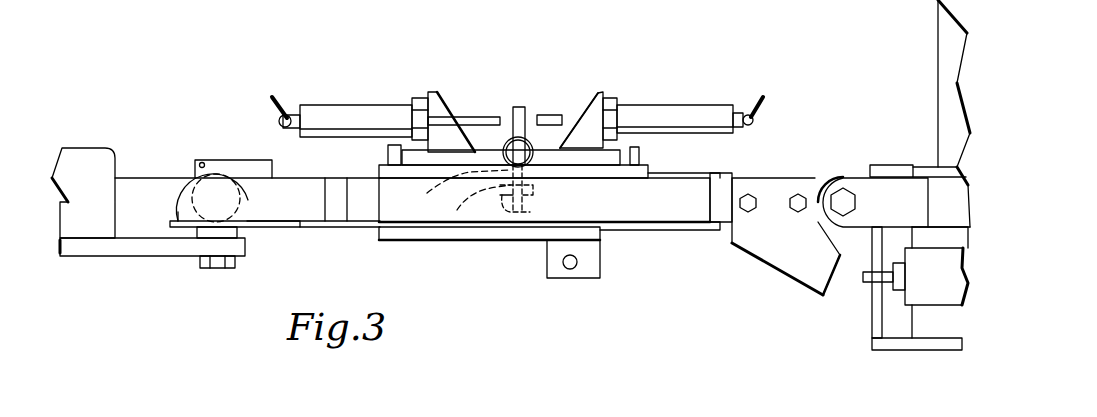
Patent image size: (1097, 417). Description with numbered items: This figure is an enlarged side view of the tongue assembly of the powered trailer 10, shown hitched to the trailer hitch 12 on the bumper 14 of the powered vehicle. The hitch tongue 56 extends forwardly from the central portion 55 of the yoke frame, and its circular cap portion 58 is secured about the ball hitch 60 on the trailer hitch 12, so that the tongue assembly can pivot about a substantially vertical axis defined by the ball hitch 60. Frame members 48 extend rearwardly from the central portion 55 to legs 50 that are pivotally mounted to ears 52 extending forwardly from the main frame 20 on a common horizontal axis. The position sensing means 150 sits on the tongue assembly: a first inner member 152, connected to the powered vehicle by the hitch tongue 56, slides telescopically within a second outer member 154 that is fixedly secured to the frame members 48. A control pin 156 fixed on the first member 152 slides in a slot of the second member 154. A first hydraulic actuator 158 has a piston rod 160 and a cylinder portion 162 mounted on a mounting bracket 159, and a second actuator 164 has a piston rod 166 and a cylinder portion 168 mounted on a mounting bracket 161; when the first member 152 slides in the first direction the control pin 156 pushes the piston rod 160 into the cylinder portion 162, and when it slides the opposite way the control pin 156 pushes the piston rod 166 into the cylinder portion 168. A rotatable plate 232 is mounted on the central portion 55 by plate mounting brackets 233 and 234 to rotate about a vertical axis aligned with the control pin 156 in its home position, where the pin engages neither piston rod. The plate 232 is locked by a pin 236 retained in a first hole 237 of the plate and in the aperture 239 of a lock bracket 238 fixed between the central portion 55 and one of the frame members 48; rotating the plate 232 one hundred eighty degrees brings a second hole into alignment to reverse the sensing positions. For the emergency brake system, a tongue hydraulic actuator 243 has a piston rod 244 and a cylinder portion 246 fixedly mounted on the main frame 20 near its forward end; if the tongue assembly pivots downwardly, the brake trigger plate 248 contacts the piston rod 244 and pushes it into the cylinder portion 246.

The powered trailer 10 is at (933, 57).
The trailer hitch 12 is at (133, 250).
The bumper 14 is at (77, 155).
The main frame 20 is at (947, 170).
The frame members 48 is at (683, 214).
The legs 50 is at (822, 182).
The ears 52 is at (904, 212).
The central portion 55 is at (445, 232).
The hitch tongue 56 is at (270, 212).
The circular cap portion 58 is at (178, 210).
The ball hitch 60 is at (213, 197).
The position sensing means 150 is at (527, 72).
The first inner member 152 is at (340, 218).
The second outer member 154 is at (390, 240).
The control pin 156 is at (520, 107).
The first hydraulic actuator 158 is at (385, 102).
The mounting bracket 159 is at (435, 98).
The piston rod 160 is at (490, 120).
The mounting bracket 161 is at (598, 92).
The cylinder portion 162 is at (315, 110).
The second actuator 164 is at (673, 110).
The piston rod 166 is at (560, 118).
The cylinder portion 168 is at (700, 115).
The rotatable plate 232 is at (480, 157).
The plate mounting bracket 233 is at (392, 155).
The plate mounting bracket 234 is at (640, 150).
The pin 236 is at (535, 152).
The first hole 237 is at (450, 186).
The lock bracket 238 is at (508, 212).
The aperture 239 is at (461, 204).
The tongue hydraulic actuator 243 is at (912, 293).
The piston rod 244 is at (885, 280).
The cylinder portion 246 is at (957, 283).
The brake trigger plate 248 is at (800, 272).